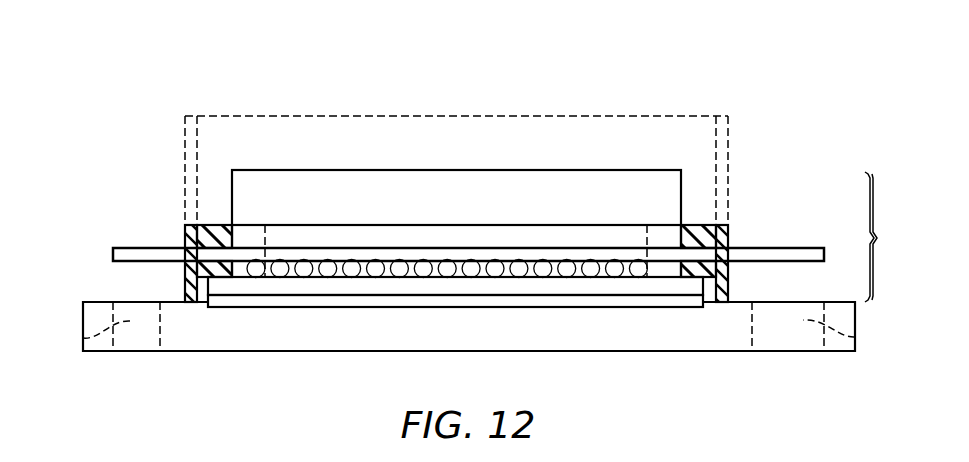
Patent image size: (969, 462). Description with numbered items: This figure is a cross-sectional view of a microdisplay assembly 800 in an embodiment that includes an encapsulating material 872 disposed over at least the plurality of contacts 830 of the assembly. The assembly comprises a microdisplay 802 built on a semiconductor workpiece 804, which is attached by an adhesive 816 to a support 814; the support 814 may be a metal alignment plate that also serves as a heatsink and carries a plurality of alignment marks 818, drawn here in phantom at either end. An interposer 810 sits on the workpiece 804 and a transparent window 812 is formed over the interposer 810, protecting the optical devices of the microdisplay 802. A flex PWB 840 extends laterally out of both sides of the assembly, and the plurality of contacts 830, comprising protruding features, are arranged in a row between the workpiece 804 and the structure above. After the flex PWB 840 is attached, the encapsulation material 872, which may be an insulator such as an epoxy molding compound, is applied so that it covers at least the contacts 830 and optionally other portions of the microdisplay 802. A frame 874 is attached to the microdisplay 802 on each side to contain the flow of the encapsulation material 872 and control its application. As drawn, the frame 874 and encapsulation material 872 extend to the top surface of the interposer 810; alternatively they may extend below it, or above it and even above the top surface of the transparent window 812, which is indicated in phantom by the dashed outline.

The microdisplay assembly 800 is at (592, 97).
The microdisplay 802 is at (895, 237).
The semiconductor workpiece 804 is at (625, 285).
The interposer 810 is at (502, 237).
The transparent window 812 is at (388, 180).
The support 814 is at (197, 351).
The adhesive 816 is at (293, 302).
The alignment marks 818 is at (83, 338).
The plurality of contacts 830 is at (377, 272).
The flex PWB 840 is at (115, 253).
The encapsulating material 872 is at (213, 227).
The frame 874 is at (190, 237).